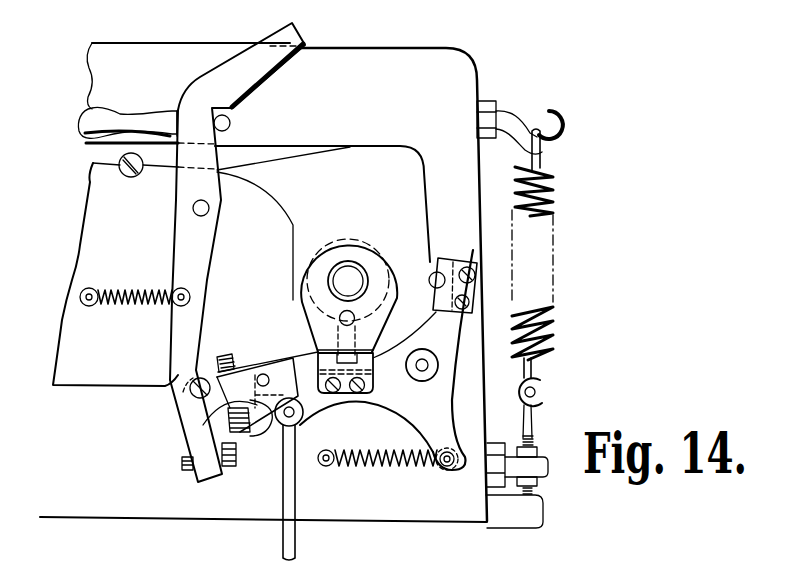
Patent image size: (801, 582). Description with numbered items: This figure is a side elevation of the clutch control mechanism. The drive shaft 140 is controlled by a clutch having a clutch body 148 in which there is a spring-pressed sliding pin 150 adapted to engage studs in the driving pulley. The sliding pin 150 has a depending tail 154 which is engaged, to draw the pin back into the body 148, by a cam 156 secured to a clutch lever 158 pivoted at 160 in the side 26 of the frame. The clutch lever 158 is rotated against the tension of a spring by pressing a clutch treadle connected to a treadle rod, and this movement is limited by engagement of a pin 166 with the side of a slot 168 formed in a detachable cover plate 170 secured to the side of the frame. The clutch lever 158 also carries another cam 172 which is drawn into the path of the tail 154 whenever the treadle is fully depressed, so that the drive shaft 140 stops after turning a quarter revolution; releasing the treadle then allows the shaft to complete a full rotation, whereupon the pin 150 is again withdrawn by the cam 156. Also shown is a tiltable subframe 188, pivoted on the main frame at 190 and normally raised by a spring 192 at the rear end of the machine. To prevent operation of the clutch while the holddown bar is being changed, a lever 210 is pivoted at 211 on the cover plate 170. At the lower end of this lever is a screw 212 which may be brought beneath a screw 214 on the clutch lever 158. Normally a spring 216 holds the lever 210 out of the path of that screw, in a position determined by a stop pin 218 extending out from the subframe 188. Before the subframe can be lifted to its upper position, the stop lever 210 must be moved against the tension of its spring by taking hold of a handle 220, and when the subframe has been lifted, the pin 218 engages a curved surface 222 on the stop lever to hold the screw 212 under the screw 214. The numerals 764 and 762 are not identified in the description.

The tiltable subframe 188 is at (122, 48).
The handle 220 is at (78, 115).
The curved surface 222 is at (270, 72).
The stop pin 218 is at (230, 123).
The side 26 is at (322, 170).
The pivot 211 is at (209, 208).
The lever 210 is at (225, 252).
The spring 216 is at (118, 301).
The detachable cover plate 170 is at (82, 372).
The screw 214 is at (208, 425).
The screw 212 is at (228, 456).
The rod 764 is at (283, 544).
The clutch body 148 is at (325, 243).
The drive shaft 140 is at (338, 275).
The sliding pin 150 is at (340, 316).
The tail 154 is at (330, 353).
The cam 156 is at (375, 372).
The pin 166 is at (269, 380).
The slot 168 is at (272, 405).
The clutch lever 158 is at (317, 403).
The pivot 160 is at (436, 368).
The tension spring 762 is at (375, 460).
The cam 172 is at (443, 262).
The pivot 190 is at (433, 285).
The spring 192 is at (556, 176).